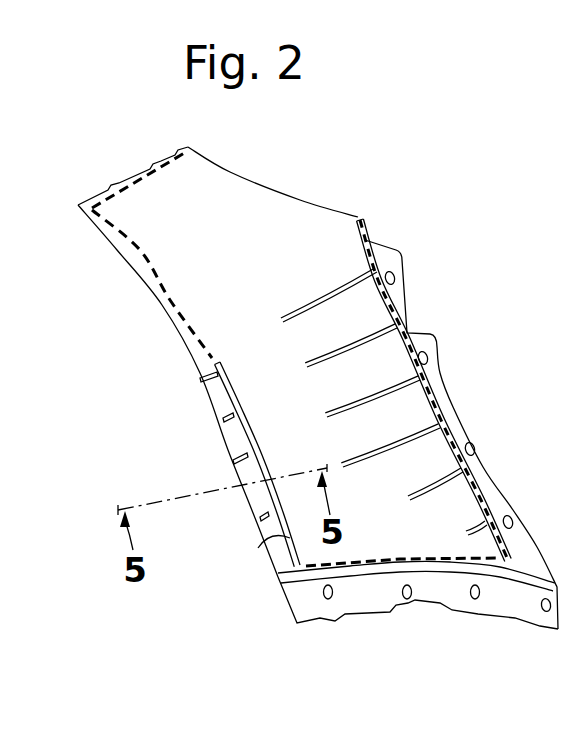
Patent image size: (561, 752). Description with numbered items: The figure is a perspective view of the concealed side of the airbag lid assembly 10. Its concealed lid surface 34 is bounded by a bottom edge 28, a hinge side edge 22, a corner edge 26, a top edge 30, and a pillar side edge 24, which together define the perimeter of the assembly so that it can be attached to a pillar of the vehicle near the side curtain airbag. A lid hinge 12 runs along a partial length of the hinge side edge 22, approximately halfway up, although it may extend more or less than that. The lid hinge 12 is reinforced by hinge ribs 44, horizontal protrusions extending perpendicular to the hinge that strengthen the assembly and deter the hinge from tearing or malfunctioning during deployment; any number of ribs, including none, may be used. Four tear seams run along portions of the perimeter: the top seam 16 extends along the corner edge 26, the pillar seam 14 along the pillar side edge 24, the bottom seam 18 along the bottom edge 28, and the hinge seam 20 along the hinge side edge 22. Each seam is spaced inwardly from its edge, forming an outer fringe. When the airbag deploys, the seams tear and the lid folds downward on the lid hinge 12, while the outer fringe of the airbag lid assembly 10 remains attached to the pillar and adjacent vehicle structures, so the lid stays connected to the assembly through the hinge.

The airbag lid assembly 10 is at (442, 302).
The lid hinge 12 is at (267, 541).
The pillar seam 14 is at (443, 400).
The top seam 16 is at (111, 187).
The bottom seam 18 is at (390, 560).
The hinge seam 20 is at (167, 298).
The hinge side edge 22 is at (212, 403).
The pillar side edge 24 is at (375, 238).
The corner edge 26 is at (124, 187).
The bottom edge 28 is at (430, 605).
The top edge 30 is at (245, 175).
The concealed lid surface 34 is at (277, 242).
The hinge ribs 44 is at (233, 454).